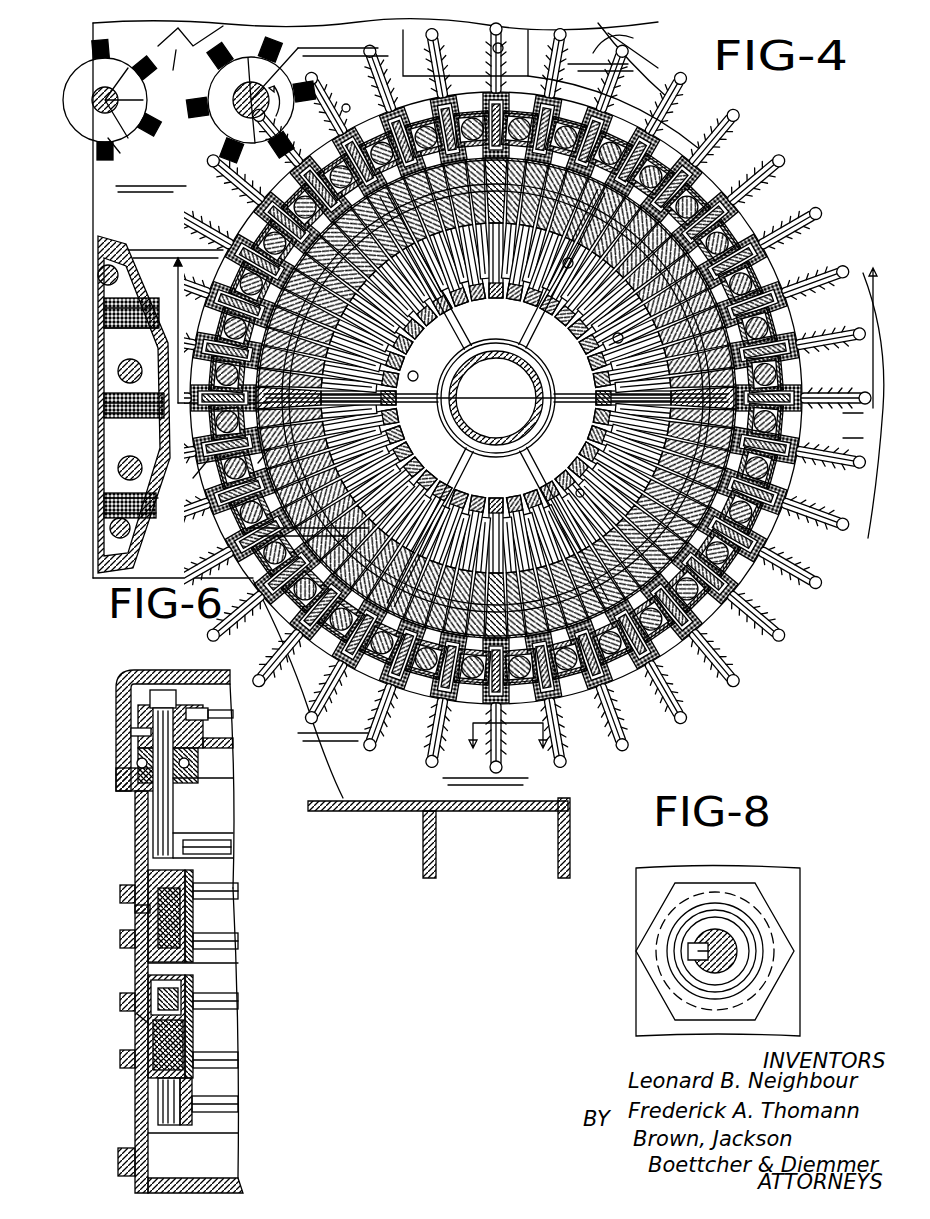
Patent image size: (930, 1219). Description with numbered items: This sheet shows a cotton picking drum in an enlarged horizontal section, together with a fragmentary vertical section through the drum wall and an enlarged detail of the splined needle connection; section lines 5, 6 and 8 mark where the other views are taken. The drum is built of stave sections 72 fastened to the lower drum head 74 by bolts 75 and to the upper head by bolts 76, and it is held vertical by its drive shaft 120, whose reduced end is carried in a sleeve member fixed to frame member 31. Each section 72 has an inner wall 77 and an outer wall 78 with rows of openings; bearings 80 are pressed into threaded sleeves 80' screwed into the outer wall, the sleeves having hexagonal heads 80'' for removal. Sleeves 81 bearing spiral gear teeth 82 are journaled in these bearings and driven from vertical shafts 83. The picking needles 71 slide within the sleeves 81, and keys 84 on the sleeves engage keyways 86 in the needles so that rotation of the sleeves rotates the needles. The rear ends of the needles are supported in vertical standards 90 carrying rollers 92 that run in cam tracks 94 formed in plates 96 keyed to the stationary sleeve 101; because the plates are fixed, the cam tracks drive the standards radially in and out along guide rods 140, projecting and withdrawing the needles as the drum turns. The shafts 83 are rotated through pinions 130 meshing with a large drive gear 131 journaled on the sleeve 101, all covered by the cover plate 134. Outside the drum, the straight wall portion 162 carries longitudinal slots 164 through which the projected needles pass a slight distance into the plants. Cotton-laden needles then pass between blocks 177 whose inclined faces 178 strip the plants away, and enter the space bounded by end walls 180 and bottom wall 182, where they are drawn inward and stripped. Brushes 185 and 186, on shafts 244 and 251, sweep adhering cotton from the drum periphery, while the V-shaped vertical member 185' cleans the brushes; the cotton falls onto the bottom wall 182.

In FIG. 4, the section line 5- 5 is at (479, 404).
In FIG. 4, the section line 6- 6 is at (223, 471).
In FIG. 4, the section line 8- 8 is at (497, 749).
In FIG. 4, the frame member 31 is at (430, 840).
In FIG. 6, the picking needle 71 is at (195, 1035).
In FIG. 8, the picking needle 71 is at (731, 894).
In FIG. 4, the stave section 72 is at (770, 505).
In FIG. 6, the stave section 72 is at (128, 795).
In FIG. 4, the lower drum head 74 is at (355, 85).
In FIG. 6, the lower drum head 74 is at (215, 1155).
In FIG. 6, the bolt 75 is at (112, 1160).
In FIG. 6, the bolt 76 is at (128, 742).
In FIG. 6, the inner wall 77 is at (190, 905).
In FIG. 6, the outer wall 78 is at (126, 900).
In FIG. 8, the outer wall 78 is at (775, 1010).
In FIG. 8, the bearing 80 is at (755, 951).
In FIG. 6, the threaded sleeve 80' is at (119, 1030).
In FIG. 8, the threaded sleeve 80' is at (754, 951).
In FIG. 8, the hexagonal head 80'' is at (752, 951).
In FIG. 6, the sleeve 81 is at (113, 884).
In FIG. 8, the sleeve 81 is at (735, 933).
In FIG. 6, the spiral gear teeth 82 is at (177, 975).
In FIG. 4, the vertical shaft 83 is at (318, 630).
In FIG. 6, the vertical shaft 83 is at (155, 808).
In FIG. 8, the key 84 is at (690, 943).
In FIG. 8, the keyway 86 is at (738, 845).
In FIG. 4, the vertical standard 90 is at (420, 358).
In FIG. 4, the roller 92 is at (540, 285).
In FIG. 4, the cam track 94 is at (520, 265).
In FIG. 4, the plate 96 is at (575, 462).
In FIG. 4, the sleeve 101 is at (520, 395).
In FIG. 4, the drive shaft 120 is at (455, 400).
In FIG. 6, the pinion 130 is at (108, 700).
In FIG. 6, the drive gear 131 is at (205, 698).
In FIG. 6, the cover plate 134 is at (160, 665).
In FIG. 4, the guide rod 140 is at (608, 332).
In FIG. 6, the guide rod 140 is at (215, 838).
In FIG. 4, the straight portion 162 is at (835, 413).
In FIG. 4, the longitudinal slot 164 is at (835, 440).
In FIG. 4, the block 177 is at (635, 39).
In FIG. 4, the inclined face 178 is at (644, 56).
In FIG. 4, the end wall 180 is at (488, 40).
In FIG. 4, the bottom wall 182 is at (410, 30).
In FIG. 4, the brush 185 is at (250, 93).
In FIG. 4, the vertical member 185' is at (192, 72).
In FIG. 4, the brush 186 is at (126, 52).
In FIG. 4, the shaft 244 is at (249, 34).
In FIG. 4, the shaft 251 is at (133, 159).